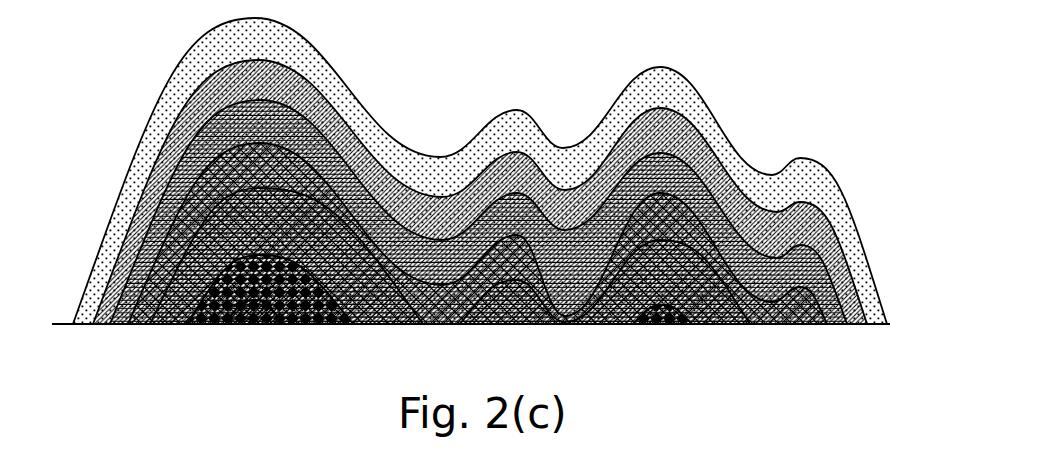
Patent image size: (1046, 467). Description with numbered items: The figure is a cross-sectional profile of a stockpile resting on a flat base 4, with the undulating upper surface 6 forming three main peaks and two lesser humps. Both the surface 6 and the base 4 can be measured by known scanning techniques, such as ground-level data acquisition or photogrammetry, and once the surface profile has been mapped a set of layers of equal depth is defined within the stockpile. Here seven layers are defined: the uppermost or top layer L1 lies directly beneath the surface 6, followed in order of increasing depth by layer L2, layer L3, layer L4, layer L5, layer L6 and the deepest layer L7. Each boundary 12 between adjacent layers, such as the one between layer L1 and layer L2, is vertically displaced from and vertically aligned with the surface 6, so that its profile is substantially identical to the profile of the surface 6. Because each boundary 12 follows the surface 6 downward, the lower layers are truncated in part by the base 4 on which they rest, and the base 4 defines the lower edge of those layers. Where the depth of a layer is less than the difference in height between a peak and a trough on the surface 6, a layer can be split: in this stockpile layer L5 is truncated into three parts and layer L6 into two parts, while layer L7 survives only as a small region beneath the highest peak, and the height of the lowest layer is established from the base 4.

The base 4 is at (710, 325).
The surface 6 is at (479, 171).
The boundary 12 is at (456, 192).
The top layer L1 is at (152, 157).
The second layer L2 is at (150, 210).
The third layer L3 is at (150, 247).
The fourth layer L4 is at (155, 297).
The fifth layer L5 is at (177, 303).
The sixth layer L6 is at (205, 318).
The seventh layer L7 is at (270, 312).